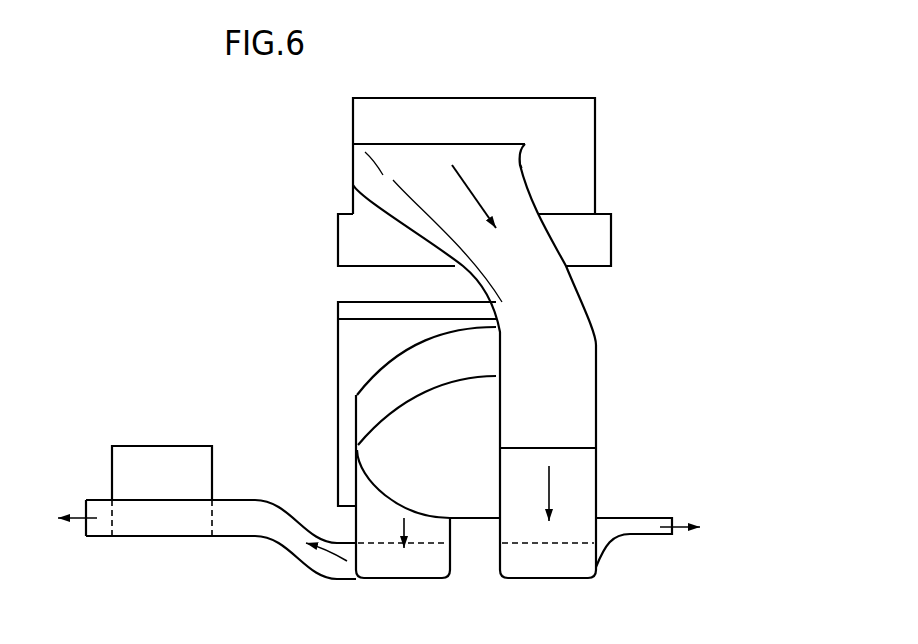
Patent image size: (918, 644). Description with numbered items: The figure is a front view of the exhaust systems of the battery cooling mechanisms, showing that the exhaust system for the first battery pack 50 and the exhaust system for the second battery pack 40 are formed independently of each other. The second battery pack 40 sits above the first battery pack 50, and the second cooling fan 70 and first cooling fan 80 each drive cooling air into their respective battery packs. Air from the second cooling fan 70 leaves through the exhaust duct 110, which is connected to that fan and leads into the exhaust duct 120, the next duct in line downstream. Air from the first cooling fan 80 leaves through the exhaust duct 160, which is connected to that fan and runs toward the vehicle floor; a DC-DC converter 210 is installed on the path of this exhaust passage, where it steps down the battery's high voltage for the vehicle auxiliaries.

The second cooling fan 70 is at (556, 126).
The second battery pack 40 is at (364, 243).
The first battery pack 50 is at (364, 354).
The exhaust duct 110 is at (573, 384).
The first cooling fan 80 is at (471, 490).
The exhaust duct 120 is at (620, 525).
The exhaust duct 160 is at (240, 520).
The DC-DC converter 210 is at (163, 467).